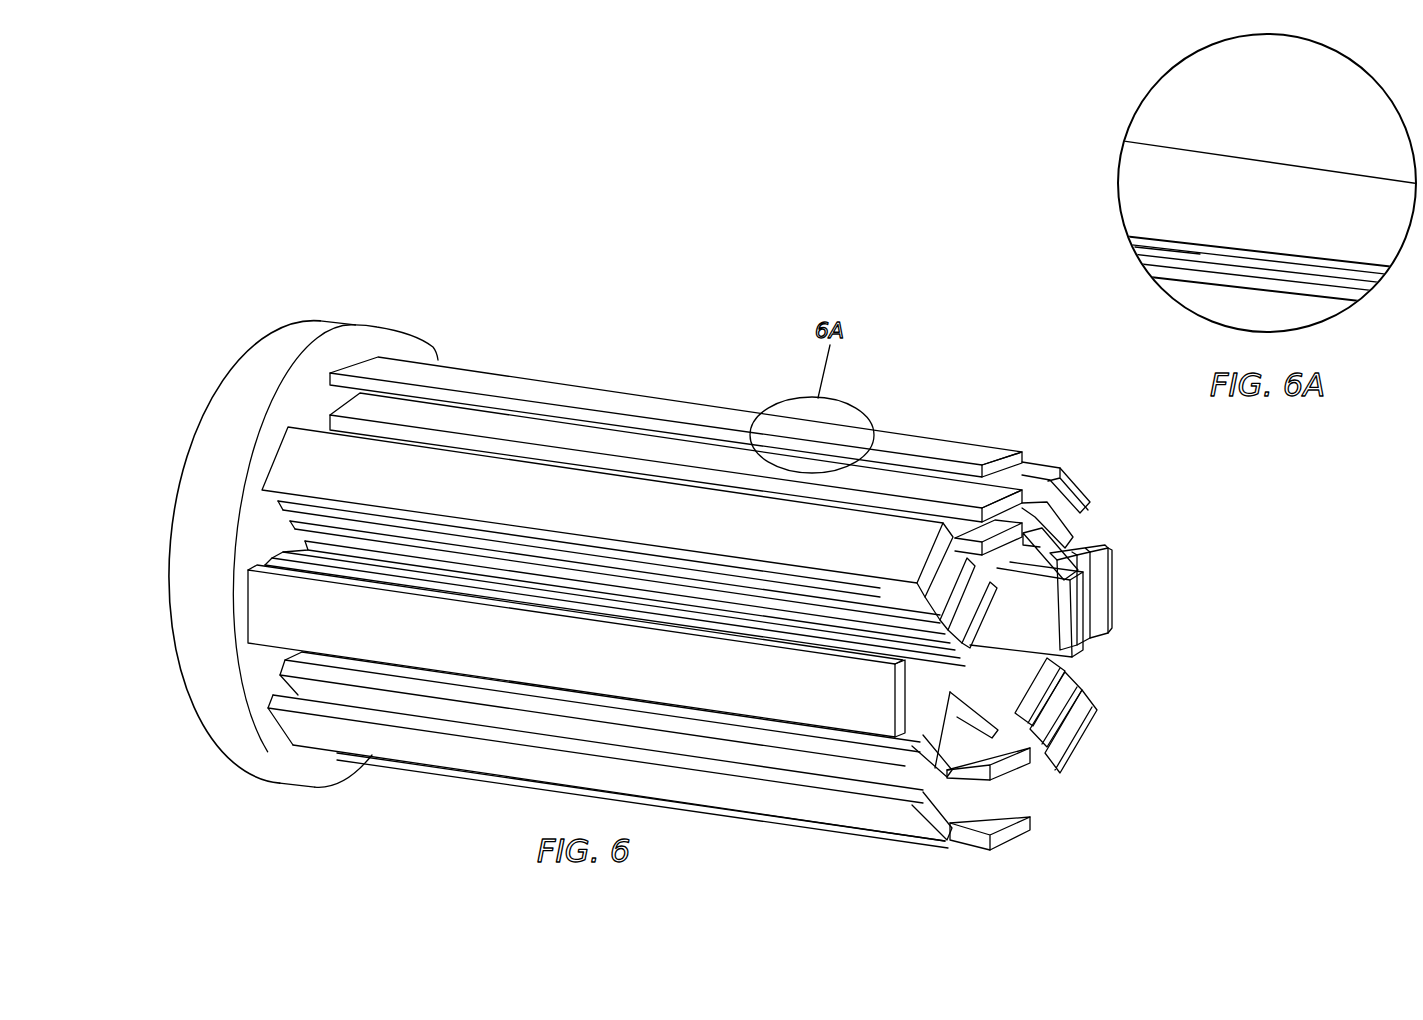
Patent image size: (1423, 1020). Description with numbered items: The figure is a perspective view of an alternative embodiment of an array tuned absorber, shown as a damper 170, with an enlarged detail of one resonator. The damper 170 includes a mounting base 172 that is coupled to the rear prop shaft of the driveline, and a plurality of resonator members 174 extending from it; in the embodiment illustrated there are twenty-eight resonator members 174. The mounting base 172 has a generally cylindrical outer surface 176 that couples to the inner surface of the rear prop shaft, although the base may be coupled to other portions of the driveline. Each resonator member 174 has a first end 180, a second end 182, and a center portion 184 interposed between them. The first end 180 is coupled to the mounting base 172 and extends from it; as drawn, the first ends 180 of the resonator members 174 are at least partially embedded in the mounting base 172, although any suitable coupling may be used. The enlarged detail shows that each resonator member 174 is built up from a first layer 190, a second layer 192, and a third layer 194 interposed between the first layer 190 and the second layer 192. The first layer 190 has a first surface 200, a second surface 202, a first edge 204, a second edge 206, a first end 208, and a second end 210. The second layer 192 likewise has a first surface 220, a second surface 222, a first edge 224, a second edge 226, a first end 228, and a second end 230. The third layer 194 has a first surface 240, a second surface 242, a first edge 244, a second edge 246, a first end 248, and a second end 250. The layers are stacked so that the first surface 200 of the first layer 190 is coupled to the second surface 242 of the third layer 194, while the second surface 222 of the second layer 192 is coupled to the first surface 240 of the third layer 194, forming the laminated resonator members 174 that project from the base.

In FIG. 6, the damper 170 is at (600, 322).
In FIG. 6, the mounting base 172 is at (313, 330).
In FIG. 6, the resonator members 174 is at (608, 395).
In FIG. 6, the cylindrical outer surface 176 is at (207, 460).
In FIG. 6, the first end 180 is at (370, 350).
In FIG. 6, the second end 182 is at (1022, 468).
In FIG. 6, the center portion 184 is at (667, 405).
In FIG. 6A, the first layer 190 is at (1157, 242).
In FIG. 6A, the second layer 192 is at (1147, 273).
In FIG. 6A, the third layer 194 is at (1153, 253).
In FIG. 6A, the first surface 200 is at (1332, 279).
In FIG. 6A, the second surface 202 is at (1318, 257).
In FIG. 6A, the first edge 204 is at (1167, 248).
In FIG. 6A, the second edge 206 is at (1228, 152).
In FIG. 6, the first end 208 is at (330, 388).
In FIG. 6, the second end 210 is at (990, 458).
In FIG. 6A, the first surface 220 is at (1317, 305).
In FIG. 6A, the second surface 222 is at (1298, 282).
In FIG. 6A, the first edge 224 is at (1200, 277).
In FIG. 6A, the second edge 226 is at (1345, 195).
In FIG. 6, the first end 228 is at (325, 385).
In FIG. 6, the second end 230 is at (1082, 512).
In FIG. 6A, the first surface 240 is at (1353, 297).
In FIG. 6A, the second surface 242 is at (1365, 273).
In FIG. 6A, the first edge 244 is at (1180, 260).
In FIG. 6A, the second edge 246 is at (1322, 170).
In FIG. 6, the first end 248 is at (303, 375).
In FIG. 6, the second end 250 is at (1068, 480).